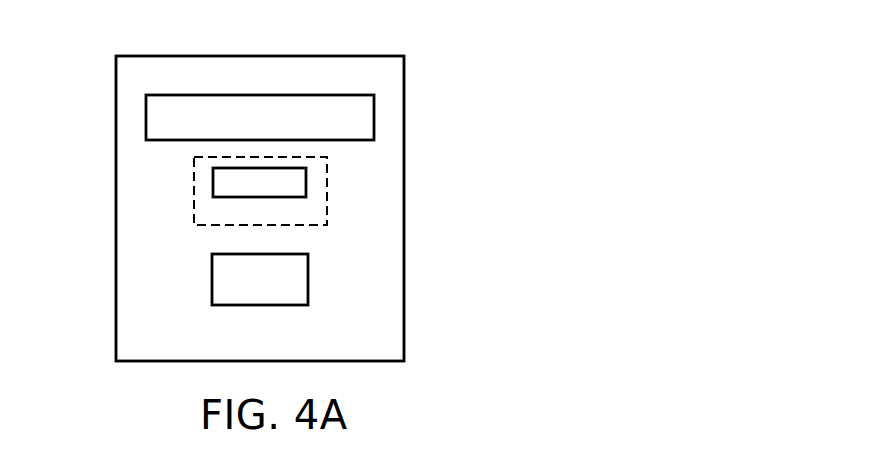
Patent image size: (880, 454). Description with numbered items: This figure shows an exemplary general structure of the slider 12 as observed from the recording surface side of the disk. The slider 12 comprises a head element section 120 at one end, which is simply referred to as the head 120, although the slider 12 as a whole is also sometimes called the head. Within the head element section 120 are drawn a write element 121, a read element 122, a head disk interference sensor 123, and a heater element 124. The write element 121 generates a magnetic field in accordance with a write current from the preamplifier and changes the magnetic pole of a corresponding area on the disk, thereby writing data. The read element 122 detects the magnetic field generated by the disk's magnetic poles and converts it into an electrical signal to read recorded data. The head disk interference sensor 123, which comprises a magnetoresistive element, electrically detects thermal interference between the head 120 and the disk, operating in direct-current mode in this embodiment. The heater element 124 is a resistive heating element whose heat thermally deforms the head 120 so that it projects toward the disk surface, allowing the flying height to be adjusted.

The slider 12 is at (496, 58).
The head element section 120 is at (116, 90).
The write element 121 is at (308, 278).
The read element 122 is at (374, 110).
The head disk interference sensor 123 is at (306, 177).
The heater element 124 is at (327, 210).